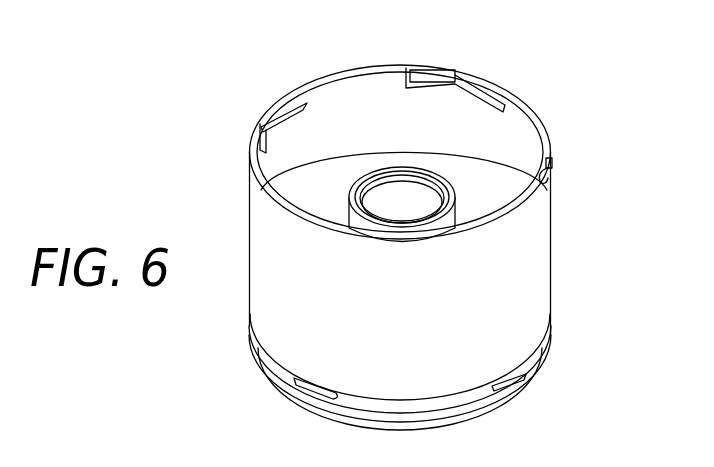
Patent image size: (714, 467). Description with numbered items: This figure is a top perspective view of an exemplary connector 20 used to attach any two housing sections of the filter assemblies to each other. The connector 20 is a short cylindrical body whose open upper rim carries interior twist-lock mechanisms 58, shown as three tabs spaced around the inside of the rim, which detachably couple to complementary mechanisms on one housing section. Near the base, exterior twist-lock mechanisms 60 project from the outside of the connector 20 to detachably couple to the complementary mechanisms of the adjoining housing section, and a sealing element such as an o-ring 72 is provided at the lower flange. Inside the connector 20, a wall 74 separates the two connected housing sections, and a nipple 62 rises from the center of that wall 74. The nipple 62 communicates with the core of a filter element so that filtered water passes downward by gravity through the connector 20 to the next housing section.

The connector 20 is at (521, 276).
The interior twist-lock mechanisms 58 is at (258, 133).
The exterior twist-lock mechanisms 60 is at (308, 389).
The nipple 62 is at (421, 188).
The o-ring 72 is at (500, 391).
The wall 74 is at (475, 193).